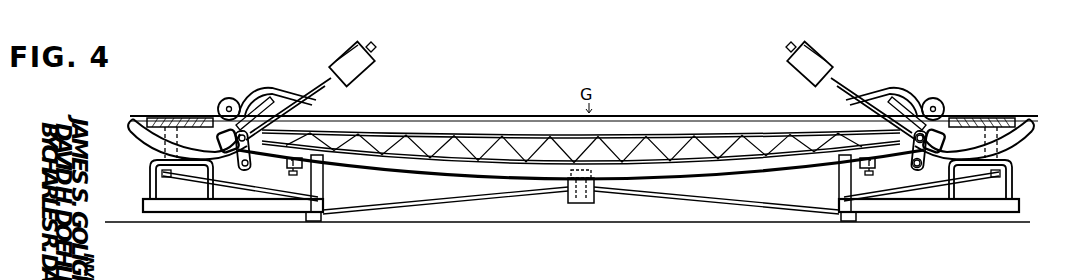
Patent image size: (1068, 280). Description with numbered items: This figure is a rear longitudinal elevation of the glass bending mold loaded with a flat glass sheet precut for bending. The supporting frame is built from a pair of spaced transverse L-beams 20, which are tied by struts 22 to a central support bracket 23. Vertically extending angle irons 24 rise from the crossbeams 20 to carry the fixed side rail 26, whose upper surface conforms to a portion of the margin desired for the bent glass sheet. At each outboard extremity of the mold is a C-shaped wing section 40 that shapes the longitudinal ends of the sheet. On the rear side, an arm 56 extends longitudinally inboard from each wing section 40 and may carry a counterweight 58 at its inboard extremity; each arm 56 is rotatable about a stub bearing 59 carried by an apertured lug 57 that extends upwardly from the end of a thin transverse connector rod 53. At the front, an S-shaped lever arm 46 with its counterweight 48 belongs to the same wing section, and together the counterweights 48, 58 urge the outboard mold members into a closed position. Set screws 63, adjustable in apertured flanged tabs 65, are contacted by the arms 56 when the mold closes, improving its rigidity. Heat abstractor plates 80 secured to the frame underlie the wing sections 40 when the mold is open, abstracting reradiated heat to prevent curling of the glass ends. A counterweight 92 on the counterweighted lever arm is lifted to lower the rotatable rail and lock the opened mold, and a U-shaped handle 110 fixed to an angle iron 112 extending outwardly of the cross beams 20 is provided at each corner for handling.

The L-beam 20 is at (312, 222).
The strut 22 is at (513, 195).
The support bracket 23 is at (589, 205).
The angle iron 24 is at (324, 185).
The fixed side rail 26 is at (422, 166).
The wing section 40 is at (153, 143).
The S-shaped lever arm 46 is at (313, 102).
The counterweight 48 is at (379, 69).
The transverse connector rod 53 is at (246, 171).
The arm 56 is at (313, 83).
The apertured lug 57 is at (928, 168).
The counterweight 58 is at (343, 56).
The stub bearing 59 is at (925, 132).
The set screw 63 is at (293, 182).
The apertured flanged tab 65 is at (876, 172).
The heat abstractor plate 80 is at (172, 120).
The counterweight 92 is at (228, 98).
The handle 110 is at (151, 175).
The angle iron 112 is at (173, 208).